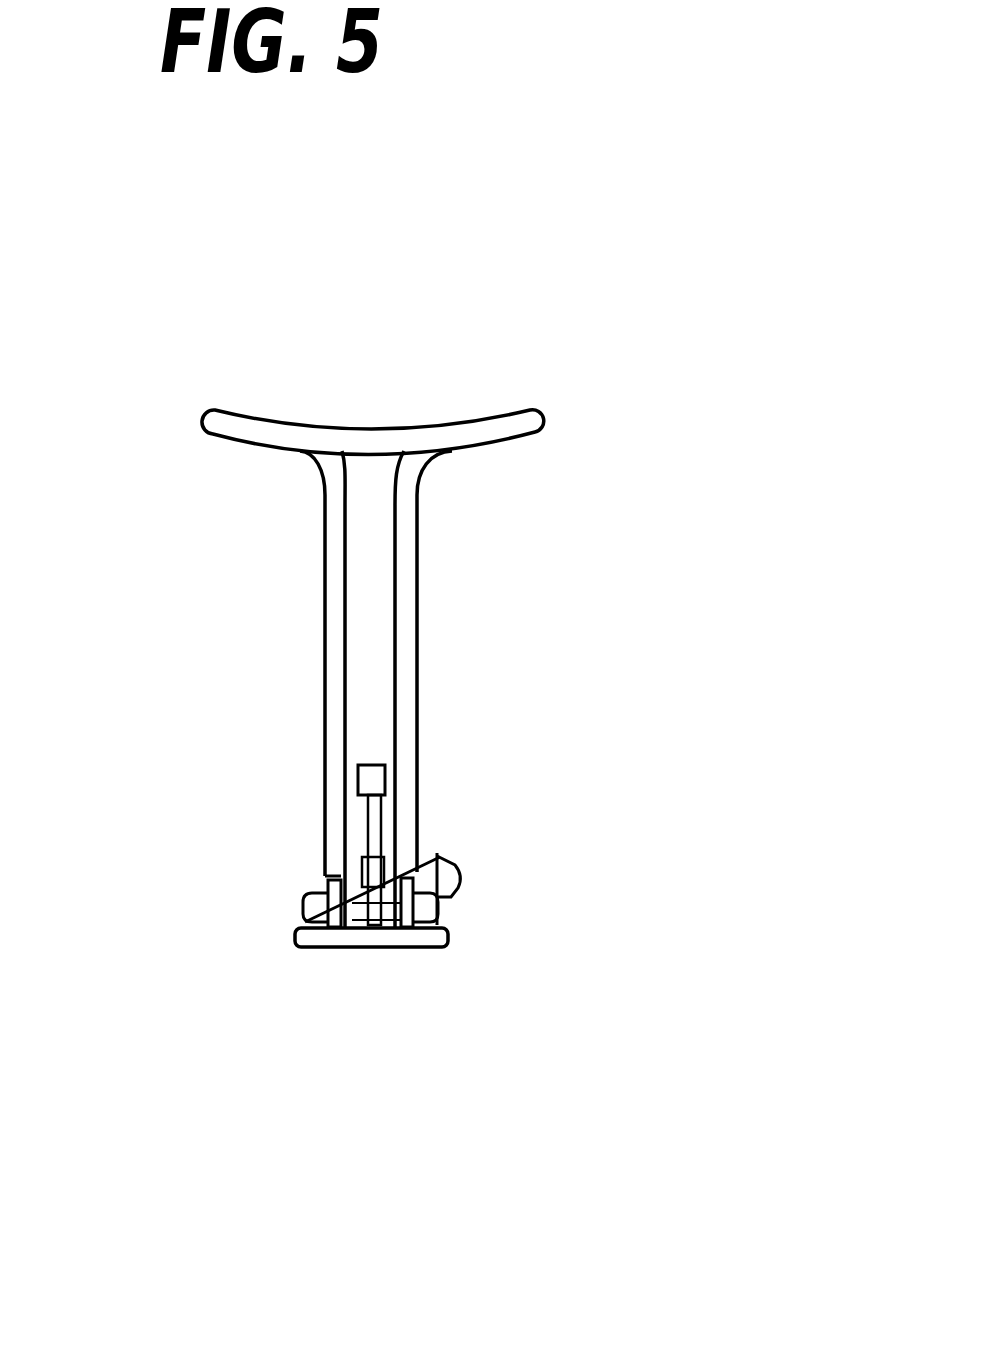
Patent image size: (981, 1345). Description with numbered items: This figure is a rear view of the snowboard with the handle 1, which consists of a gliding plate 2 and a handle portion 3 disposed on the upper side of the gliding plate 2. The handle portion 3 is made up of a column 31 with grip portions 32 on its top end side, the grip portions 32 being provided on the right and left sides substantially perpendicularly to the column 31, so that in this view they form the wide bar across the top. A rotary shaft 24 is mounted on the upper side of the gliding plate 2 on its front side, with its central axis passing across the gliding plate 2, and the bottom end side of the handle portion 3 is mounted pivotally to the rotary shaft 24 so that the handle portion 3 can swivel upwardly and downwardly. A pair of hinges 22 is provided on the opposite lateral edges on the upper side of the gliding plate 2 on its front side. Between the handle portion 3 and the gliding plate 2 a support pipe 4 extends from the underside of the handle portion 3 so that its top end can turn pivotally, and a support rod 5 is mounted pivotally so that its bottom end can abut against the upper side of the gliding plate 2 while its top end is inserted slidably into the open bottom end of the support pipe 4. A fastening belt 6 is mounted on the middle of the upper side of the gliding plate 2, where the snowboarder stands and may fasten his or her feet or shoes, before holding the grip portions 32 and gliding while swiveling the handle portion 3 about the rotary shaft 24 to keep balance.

The snowboard with the handle 1 is at (323, 597).
The gliding plate 2 is at (330, 937).
The hinges 22 is at (303, 920).
The rotary shaft 24 is at (303, 908).
The handle portion 3 is at (368, 595).
The column 31 is at (405, 523).
The grip portions 32 is at (478, 428).
The support pipe 4 is at (382, 823).
The support rod 5 is at (377, 890).
The fastening belt 6 is at (460, 878).